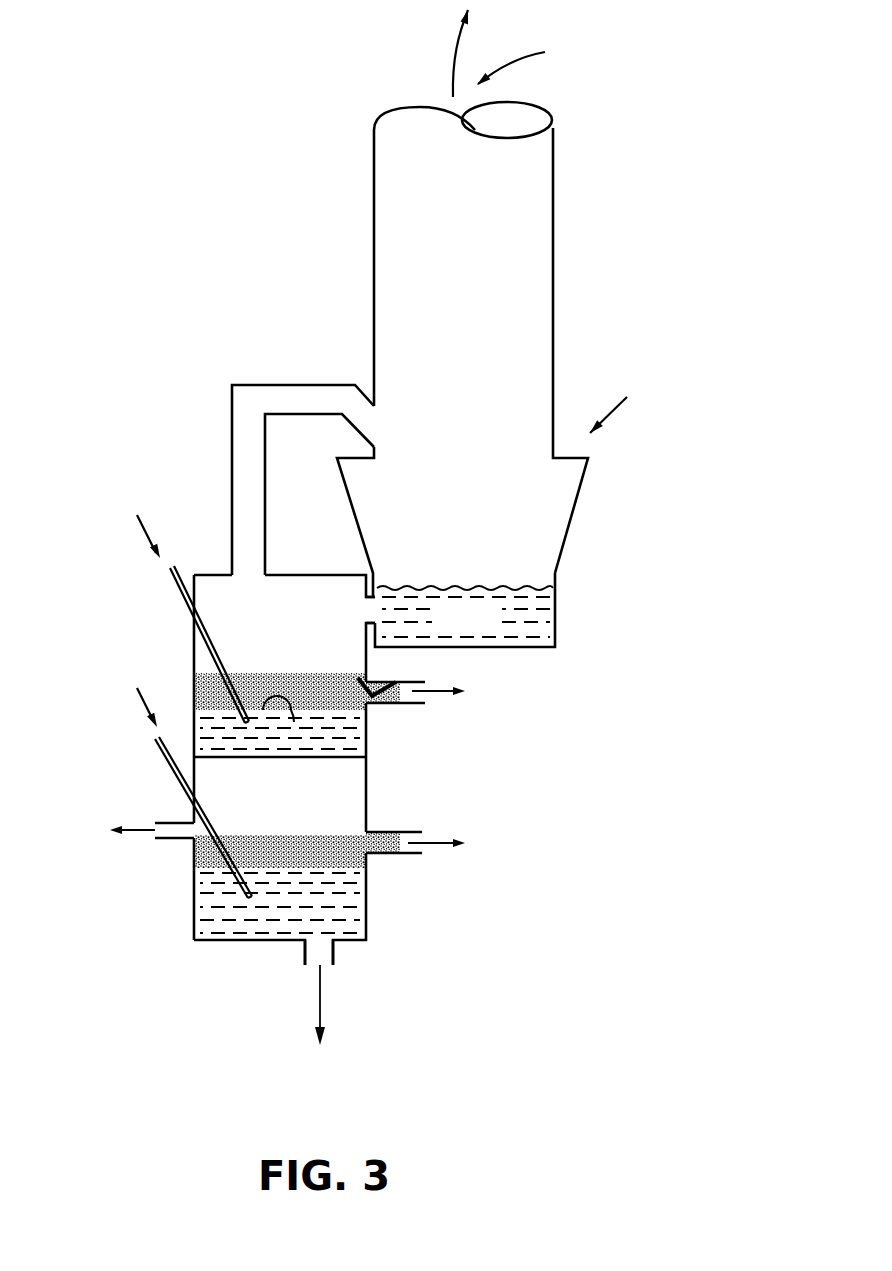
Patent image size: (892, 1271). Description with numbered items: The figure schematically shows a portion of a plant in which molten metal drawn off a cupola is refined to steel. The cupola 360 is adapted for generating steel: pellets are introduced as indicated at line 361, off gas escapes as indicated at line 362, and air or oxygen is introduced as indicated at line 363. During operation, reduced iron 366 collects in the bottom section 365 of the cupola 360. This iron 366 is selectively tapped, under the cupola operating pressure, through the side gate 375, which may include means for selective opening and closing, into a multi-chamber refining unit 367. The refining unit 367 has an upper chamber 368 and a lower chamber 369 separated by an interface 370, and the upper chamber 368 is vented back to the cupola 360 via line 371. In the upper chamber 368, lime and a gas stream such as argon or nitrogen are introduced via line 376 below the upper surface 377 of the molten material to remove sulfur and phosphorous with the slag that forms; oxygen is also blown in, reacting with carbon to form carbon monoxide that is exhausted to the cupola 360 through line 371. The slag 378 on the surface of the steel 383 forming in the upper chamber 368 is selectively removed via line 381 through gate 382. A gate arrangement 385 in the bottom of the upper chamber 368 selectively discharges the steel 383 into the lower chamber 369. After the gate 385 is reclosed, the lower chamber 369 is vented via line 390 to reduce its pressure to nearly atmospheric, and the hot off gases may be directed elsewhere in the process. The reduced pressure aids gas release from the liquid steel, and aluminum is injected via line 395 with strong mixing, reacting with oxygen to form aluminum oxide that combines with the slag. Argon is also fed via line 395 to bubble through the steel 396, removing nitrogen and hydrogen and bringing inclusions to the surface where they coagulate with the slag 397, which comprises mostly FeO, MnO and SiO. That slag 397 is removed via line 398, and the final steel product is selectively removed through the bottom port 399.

The cupola 360 is at (555, 240).
The pellet introduction line 361 is at (517, 50).
The off gas escape line 362 is at (452, 57).
The air or oxygen introduction line 363 is at (607, 418).
The bottom section of cupola 365 is at (558, 603).
The reduced iron 366 is at (408, 597).
The multi-chamber refining unit 367 is at (193, 657).
The upper chamber 368 is at (347, 573).
The lower chamber 369 is at (368, 783).
The interface 370 is at (233, 762).
The vent line 371 is at (318, 384).
The side gate 375 is at (368, 610).
The introduction line 376 is at (172, 589).
The upper surface of molten material 377 is at (285, 722).
The slag 378 is at (326, 674).
The slag removal line 381 is at (420, 706).
The gate 382 is at (396, 682).
The steel 383 is at (352, 745).
The gate arrangement 385 is at (316, 762).
The vent line 390 is at (177, 843).
The injection line 395 is at (165, 755).
The steel 396 is at (207, 927).
The slag 397 is at (344, 856).
The slag removal line 398 is at (408, 856).
The bottom port 399 is at (336, 953).